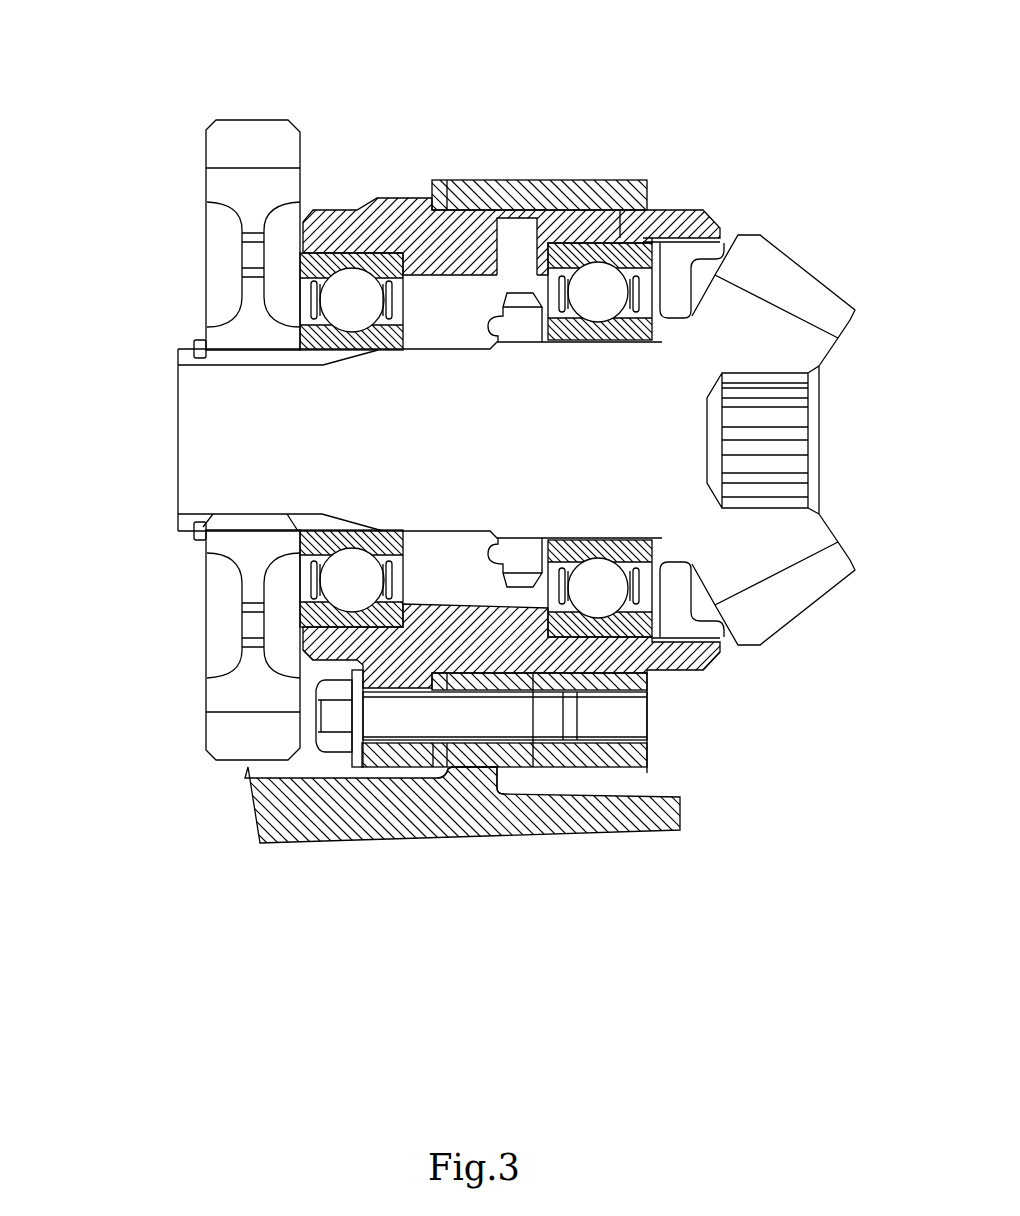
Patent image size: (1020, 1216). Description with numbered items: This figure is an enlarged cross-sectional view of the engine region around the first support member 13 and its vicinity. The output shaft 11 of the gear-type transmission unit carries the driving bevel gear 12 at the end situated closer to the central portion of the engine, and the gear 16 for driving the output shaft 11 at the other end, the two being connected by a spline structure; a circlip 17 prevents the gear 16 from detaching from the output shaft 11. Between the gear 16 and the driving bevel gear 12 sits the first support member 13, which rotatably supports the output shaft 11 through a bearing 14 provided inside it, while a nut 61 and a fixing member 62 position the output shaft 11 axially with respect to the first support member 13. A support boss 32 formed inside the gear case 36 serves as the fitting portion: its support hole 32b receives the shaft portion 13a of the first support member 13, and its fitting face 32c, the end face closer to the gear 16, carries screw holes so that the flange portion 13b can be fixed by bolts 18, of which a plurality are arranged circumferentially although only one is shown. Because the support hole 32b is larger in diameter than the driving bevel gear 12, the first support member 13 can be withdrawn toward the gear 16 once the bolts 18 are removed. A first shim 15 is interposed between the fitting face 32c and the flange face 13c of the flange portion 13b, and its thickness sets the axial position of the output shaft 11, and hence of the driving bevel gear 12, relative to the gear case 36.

The output shaft 11 is at (207, 447).
The driving bevel gear 12 is at (805, 290).
The first support member 13 is at (685, 190).
The shaft portion 13a is at (533, 767).
The flange portion 13b is at (398, 760).
The flange face 13c is at (457, 770).
The bearing 14 is at (330, 250).
The first shim 15 is at (440, 180).
The gear 16 is at (223, 188).
The circlip 17 is at (193, 342).
The bolts 18 is at (338, 745).
The support boss 32 is at (555, 205).
The support hole 32b is at (575, 648).
The fitting face 32c is at (548, 606).
The gear case 36 is at (595, 813).
The nut 61 is at (518, 320).
The fixing member 62 is at (677, 275).